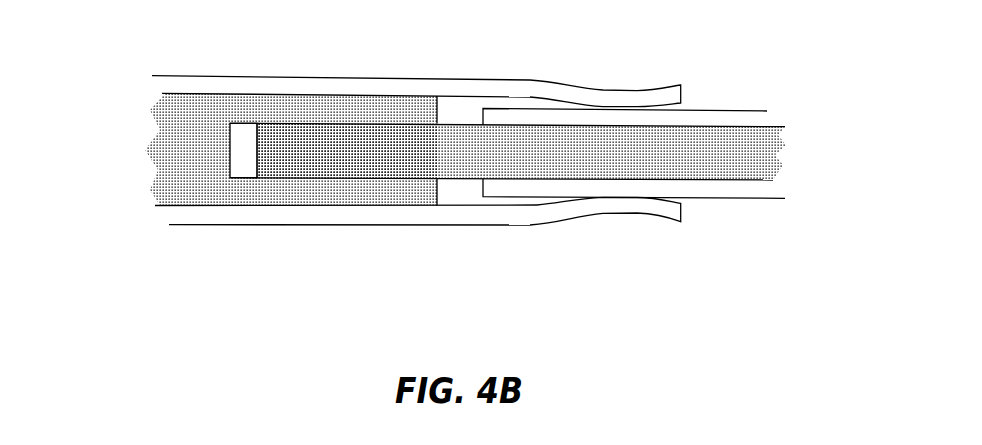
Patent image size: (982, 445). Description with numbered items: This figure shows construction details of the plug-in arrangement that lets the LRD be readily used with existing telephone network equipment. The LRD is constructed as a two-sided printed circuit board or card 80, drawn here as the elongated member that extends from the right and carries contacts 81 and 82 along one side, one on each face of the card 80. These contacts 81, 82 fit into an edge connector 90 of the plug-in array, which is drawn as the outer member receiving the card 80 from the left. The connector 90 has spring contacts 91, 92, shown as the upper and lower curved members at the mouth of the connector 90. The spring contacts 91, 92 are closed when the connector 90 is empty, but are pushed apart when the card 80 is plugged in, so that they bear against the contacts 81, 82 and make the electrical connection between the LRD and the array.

The printed circuit board or card 80 is at (775, 162).
The contact 81 is at (728, 88).
The contact 82 is at (718, 210).
The edge connector 90 is at (135, 205).
The spring contact 91 is at (570, 78).
The spring contact 92 is at (572, 223).
The element LRD is at (782, 142).